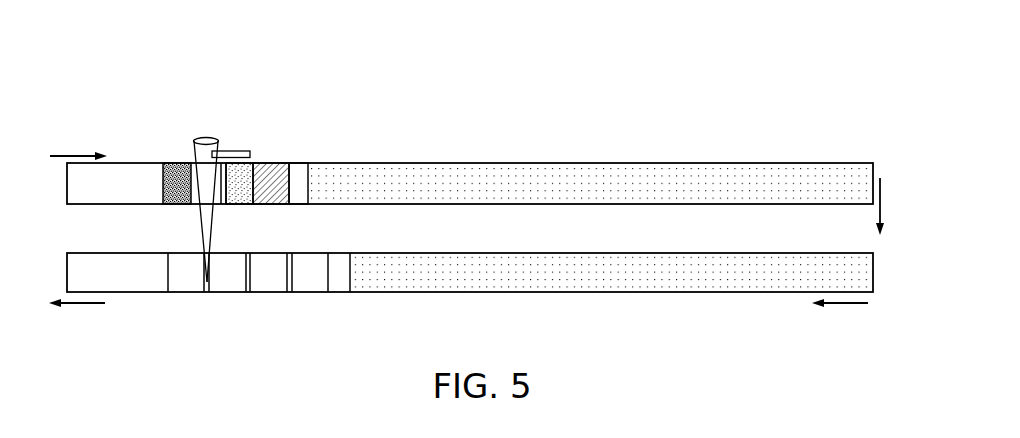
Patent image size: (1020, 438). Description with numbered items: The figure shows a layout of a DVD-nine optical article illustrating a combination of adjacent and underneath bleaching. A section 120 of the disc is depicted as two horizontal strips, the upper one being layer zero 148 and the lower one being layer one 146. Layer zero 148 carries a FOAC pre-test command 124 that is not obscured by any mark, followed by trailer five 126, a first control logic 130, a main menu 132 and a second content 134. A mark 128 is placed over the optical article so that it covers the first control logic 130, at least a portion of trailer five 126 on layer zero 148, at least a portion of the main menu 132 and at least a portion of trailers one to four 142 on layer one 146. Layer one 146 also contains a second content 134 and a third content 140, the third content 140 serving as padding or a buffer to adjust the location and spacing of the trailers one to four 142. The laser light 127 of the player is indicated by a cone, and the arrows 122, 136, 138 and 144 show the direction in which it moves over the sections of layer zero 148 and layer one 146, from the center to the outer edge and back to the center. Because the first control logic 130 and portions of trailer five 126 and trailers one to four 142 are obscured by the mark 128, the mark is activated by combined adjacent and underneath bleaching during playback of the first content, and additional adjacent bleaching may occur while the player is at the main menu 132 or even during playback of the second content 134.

The section 120 is at (458, 188).
The arrow 122 is at (72, 152).
The FOAC pre-test command 124 is at (181, 204).
The trailer 5 126 is at (204, 172).
The laser light 127 is at (201, 137).
The mark 128 is at (229, 151).
The first control logic 130 is at (247, 170).
The main menu 132 is at (291, 188).
The second content 134 is at (702, 170).
The arrow 136 is at (876, 210).
The arrow 138 is at (845, 306).
The third content 140 is at (342, 263).
The trailers 1 to 4 142 is at (272, 291).
The arrow 144 is at (84, 305).
The layer 1 146 is at (67, 272).
The layer 0 148 is at (67, 183).